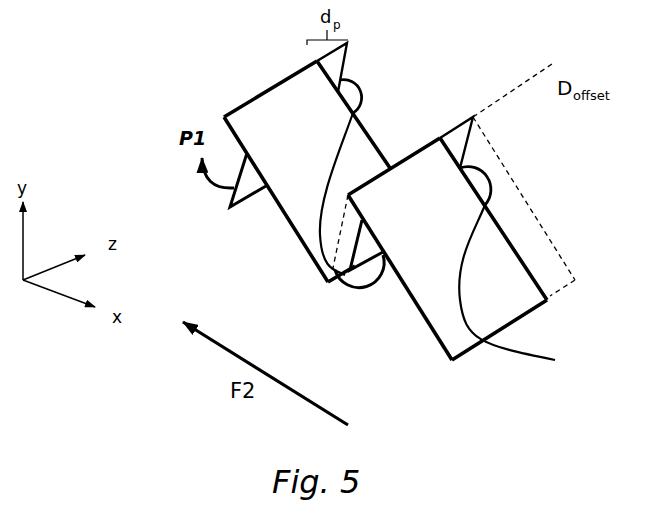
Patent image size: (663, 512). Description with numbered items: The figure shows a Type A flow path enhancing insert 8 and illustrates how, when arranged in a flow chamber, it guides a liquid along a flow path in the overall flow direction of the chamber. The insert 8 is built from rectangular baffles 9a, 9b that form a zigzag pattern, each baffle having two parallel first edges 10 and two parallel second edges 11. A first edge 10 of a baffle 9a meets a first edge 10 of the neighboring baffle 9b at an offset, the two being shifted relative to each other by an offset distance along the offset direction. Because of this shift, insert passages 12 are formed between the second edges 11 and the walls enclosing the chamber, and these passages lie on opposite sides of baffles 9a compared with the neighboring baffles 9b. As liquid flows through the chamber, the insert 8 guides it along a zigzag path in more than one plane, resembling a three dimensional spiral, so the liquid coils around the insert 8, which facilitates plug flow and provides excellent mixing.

The flow path enhancing insert 8 is at (357, 217).
The baffle 9a is at (422, 255).
The baffle 9b is at (348, 267).
The first edge 10 is at (400, 148).
The second edge 11 is at (425, 323).
The insert passage 12 is at (348, 232).